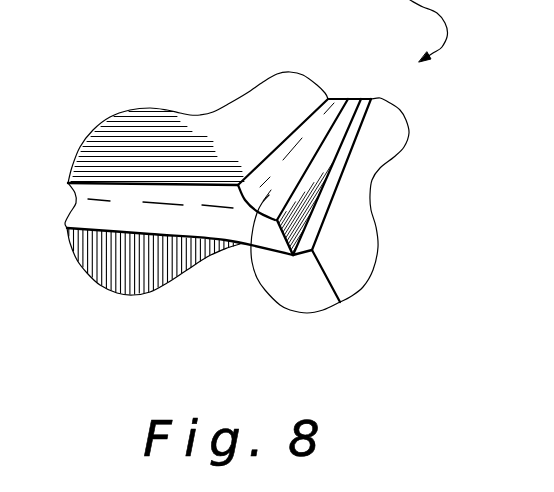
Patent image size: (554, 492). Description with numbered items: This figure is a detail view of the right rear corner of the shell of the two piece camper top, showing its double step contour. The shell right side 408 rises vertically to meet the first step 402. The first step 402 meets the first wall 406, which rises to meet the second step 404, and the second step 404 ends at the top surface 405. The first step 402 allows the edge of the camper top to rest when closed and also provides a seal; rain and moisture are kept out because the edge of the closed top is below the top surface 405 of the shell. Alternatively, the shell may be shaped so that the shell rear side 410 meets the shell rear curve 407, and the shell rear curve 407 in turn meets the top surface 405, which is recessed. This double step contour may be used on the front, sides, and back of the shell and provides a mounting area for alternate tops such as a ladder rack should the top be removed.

The first step 402 is at (360, 98).
The second step 404 is at (203, 278).
The top surface 405 is at (223, 128).
The first wall 406 is at (322, 163).
The shell rear curve 407 is at (90, 212).
The shell right side 408 is at (352, 232).
The shell rear side 410 is at (163, 270).